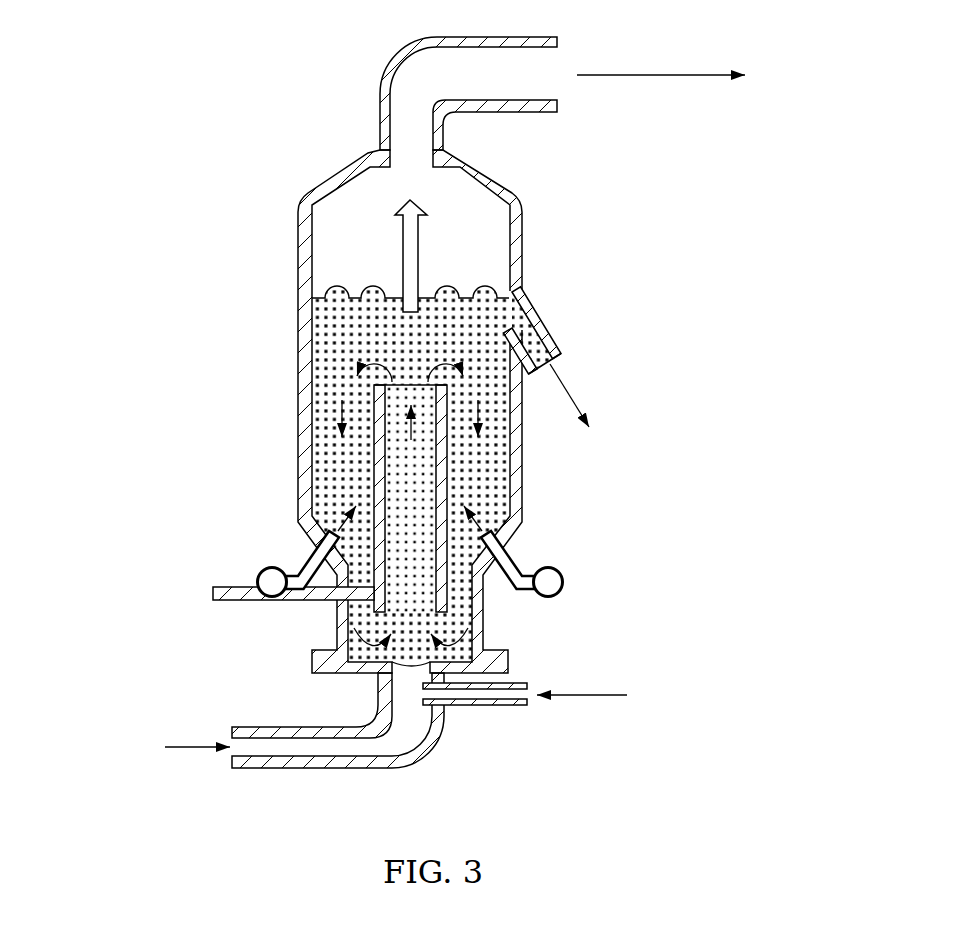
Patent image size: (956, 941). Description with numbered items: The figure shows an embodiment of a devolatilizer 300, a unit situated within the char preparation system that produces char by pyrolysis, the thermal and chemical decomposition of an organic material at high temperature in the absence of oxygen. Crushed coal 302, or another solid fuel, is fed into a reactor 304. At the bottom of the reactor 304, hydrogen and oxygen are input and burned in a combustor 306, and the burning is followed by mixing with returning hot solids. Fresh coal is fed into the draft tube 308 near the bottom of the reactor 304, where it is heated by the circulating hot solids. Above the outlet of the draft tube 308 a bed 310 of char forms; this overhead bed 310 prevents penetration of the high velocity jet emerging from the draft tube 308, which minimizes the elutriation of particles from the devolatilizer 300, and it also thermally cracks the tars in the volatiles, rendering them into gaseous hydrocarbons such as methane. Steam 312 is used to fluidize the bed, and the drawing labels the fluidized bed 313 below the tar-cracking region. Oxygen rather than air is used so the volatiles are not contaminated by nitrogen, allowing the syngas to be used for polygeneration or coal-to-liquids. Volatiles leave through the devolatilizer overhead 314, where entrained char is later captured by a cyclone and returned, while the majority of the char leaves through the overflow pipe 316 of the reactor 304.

The devolatilizer 300 is at (208, 68).
The crushed coal 302 is at (210, 593).
The reactor 304 is at (298, 430).
The combustor 306 is at (412, 685).
The draft tube 308 is at (307, 556).
The bed 310 is at (53, 352).
The steam 312 is at (580, 582).
The fluidized bed 313 is at (98, 401).
The devolatilizer overhead 314 is at (534, 113).
The overflow pipe 316 is at (540, 318).